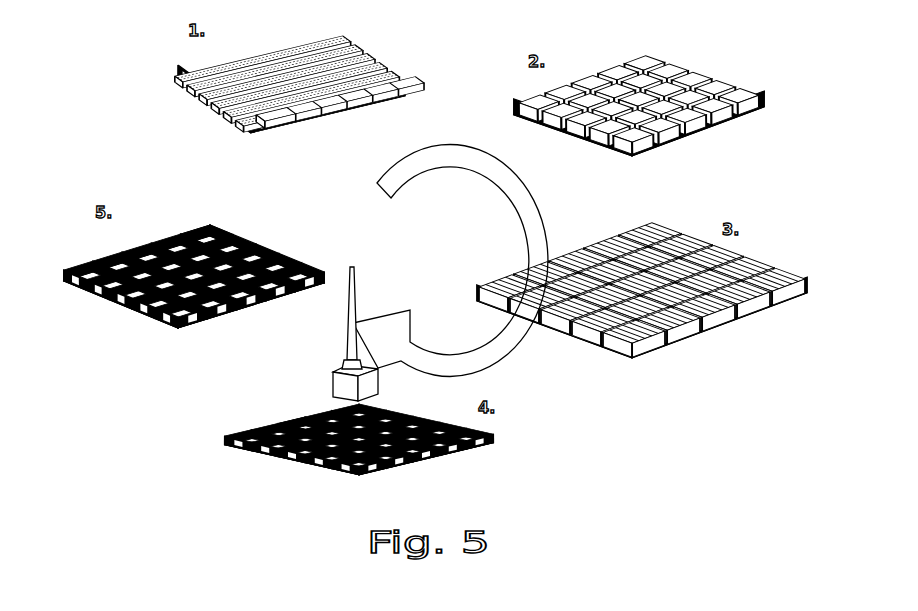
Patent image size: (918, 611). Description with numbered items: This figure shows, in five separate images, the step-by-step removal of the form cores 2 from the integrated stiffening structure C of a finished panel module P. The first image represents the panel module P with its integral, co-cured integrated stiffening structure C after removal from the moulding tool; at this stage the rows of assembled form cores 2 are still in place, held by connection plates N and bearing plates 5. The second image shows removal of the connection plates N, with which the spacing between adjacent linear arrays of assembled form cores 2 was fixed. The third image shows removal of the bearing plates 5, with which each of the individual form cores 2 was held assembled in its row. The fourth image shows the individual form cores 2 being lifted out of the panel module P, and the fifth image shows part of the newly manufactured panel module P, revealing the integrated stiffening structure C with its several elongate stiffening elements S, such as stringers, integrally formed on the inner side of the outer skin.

The panel module P is at (200, 132).
The connection plates N is at (287, 54).
The bearing plates 5 is at (330, 133).
The form cores 2 is at (617, 290).
The stiffening elements S is at (287, 258).
The integrated stiffening structure C is at (177, 241).